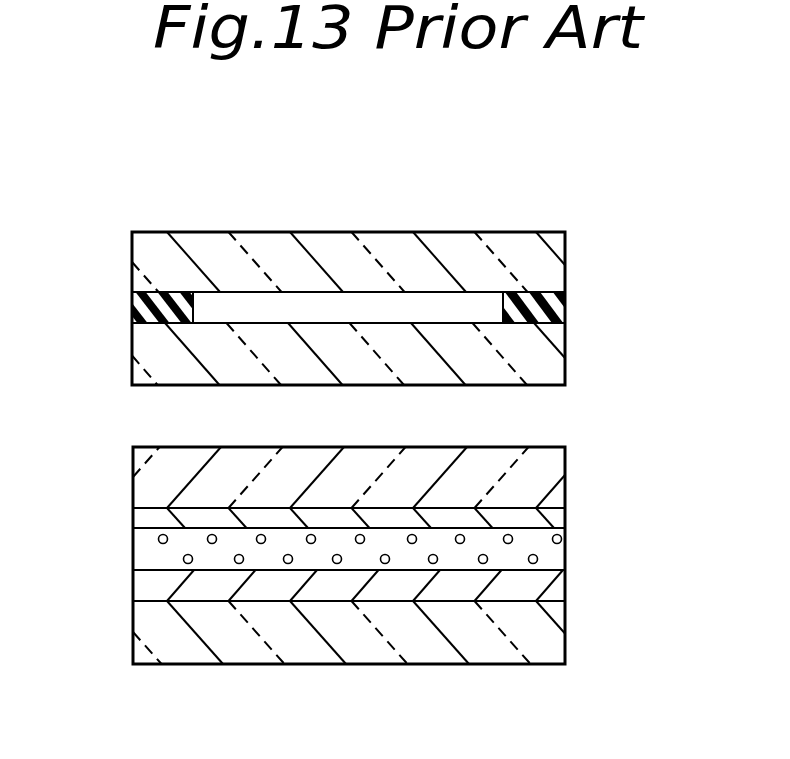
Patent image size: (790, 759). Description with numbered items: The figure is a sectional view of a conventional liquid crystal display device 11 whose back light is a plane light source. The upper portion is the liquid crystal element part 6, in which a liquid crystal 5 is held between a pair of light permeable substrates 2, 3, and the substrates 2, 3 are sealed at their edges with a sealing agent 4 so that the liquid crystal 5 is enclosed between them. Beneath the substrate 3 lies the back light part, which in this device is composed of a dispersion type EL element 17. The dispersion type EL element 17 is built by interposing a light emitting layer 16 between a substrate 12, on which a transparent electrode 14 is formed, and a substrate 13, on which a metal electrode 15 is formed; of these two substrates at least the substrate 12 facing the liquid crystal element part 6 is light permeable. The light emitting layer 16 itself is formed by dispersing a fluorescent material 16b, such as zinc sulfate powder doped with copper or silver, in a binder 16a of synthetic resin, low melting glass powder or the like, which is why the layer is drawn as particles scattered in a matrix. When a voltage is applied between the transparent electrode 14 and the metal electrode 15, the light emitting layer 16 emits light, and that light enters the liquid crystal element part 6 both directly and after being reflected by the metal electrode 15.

The liquid crystal display device 11 is at (303, 150).
The liquid crystal element part 6 is at (640, 238).
The light permeable substrate 2 is at (555, 270).
The light permeable substrate 3 is at (552, 360).
The sealing agent 4 is at (162, 309).
The liquid crystal 5 is at (222, 300).
The dispersion type EL element 17 is at (653, 460).
The substrate 12 is at (552, 470).
The substrate 13 is at (550, 633).
The transparent electrode 14 is at (557, 512).
The metal electrode 15 is at (553, 587).
The light emitting layer 16 is at (150, 542).
The binder 16a is at (172, 562).
The fluorescent material 16b is at (160, 548).